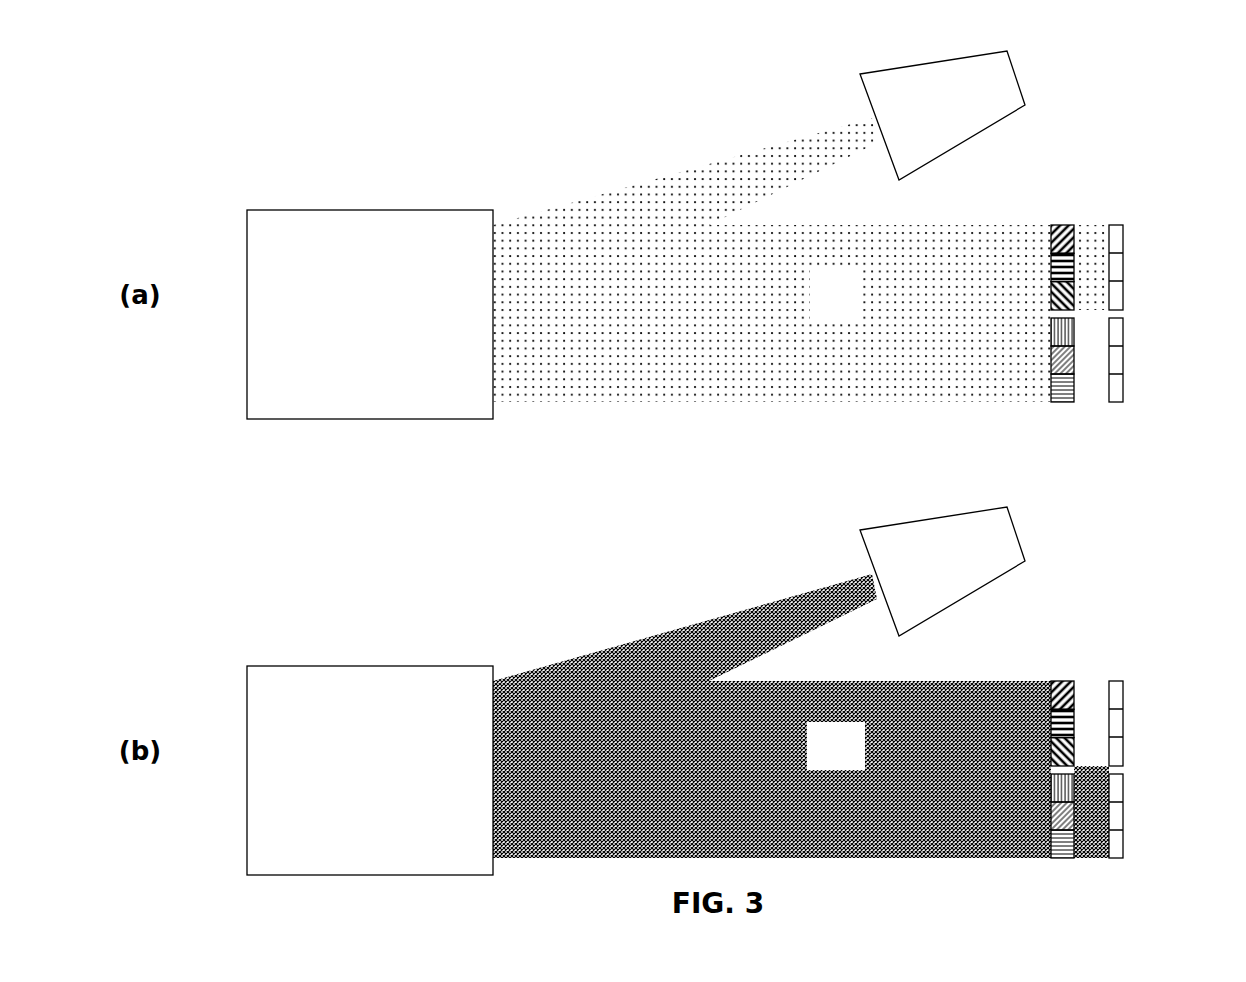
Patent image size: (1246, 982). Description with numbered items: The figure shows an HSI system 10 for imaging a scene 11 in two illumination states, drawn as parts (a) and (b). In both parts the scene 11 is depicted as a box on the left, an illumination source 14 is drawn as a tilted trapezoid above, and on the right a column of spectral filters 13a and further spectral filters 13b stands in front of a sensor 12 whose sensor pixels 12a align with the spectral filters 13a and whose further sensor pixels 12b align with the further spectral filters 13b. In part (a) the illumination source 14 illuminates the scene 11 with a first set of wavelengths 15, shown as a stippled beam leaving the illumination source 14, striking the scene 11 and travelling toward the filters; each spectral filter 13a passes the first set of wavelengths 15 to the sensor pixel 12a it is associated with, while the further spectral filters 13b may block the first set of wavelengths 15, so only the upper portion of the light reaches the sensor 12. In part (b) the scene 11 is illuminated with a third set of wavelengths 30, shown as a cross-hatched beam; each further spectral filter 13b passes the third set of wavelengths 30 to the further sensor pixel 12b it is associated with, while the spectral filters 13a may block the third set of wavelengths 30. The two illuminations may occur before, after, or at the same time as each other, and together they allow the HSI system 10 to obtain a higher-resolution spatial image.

The HSI system 10 is at (1086, 84).
The scene 11 is at (378, 210).
The sensor 12 is at (1162, 525).
The sensor pixels 12a is at (1116, 300).
The further sensor pixels 12b is at (1116, 388).
The spectral filters 13a is at (1060, 228).
The further spectral filters 13b is at (1067, 402).
The illumination source 14 is at (882, 70).
The first set of wavelengths 15 is at (657, 180).
The third set of wavelengths 30 is at (659, 636).